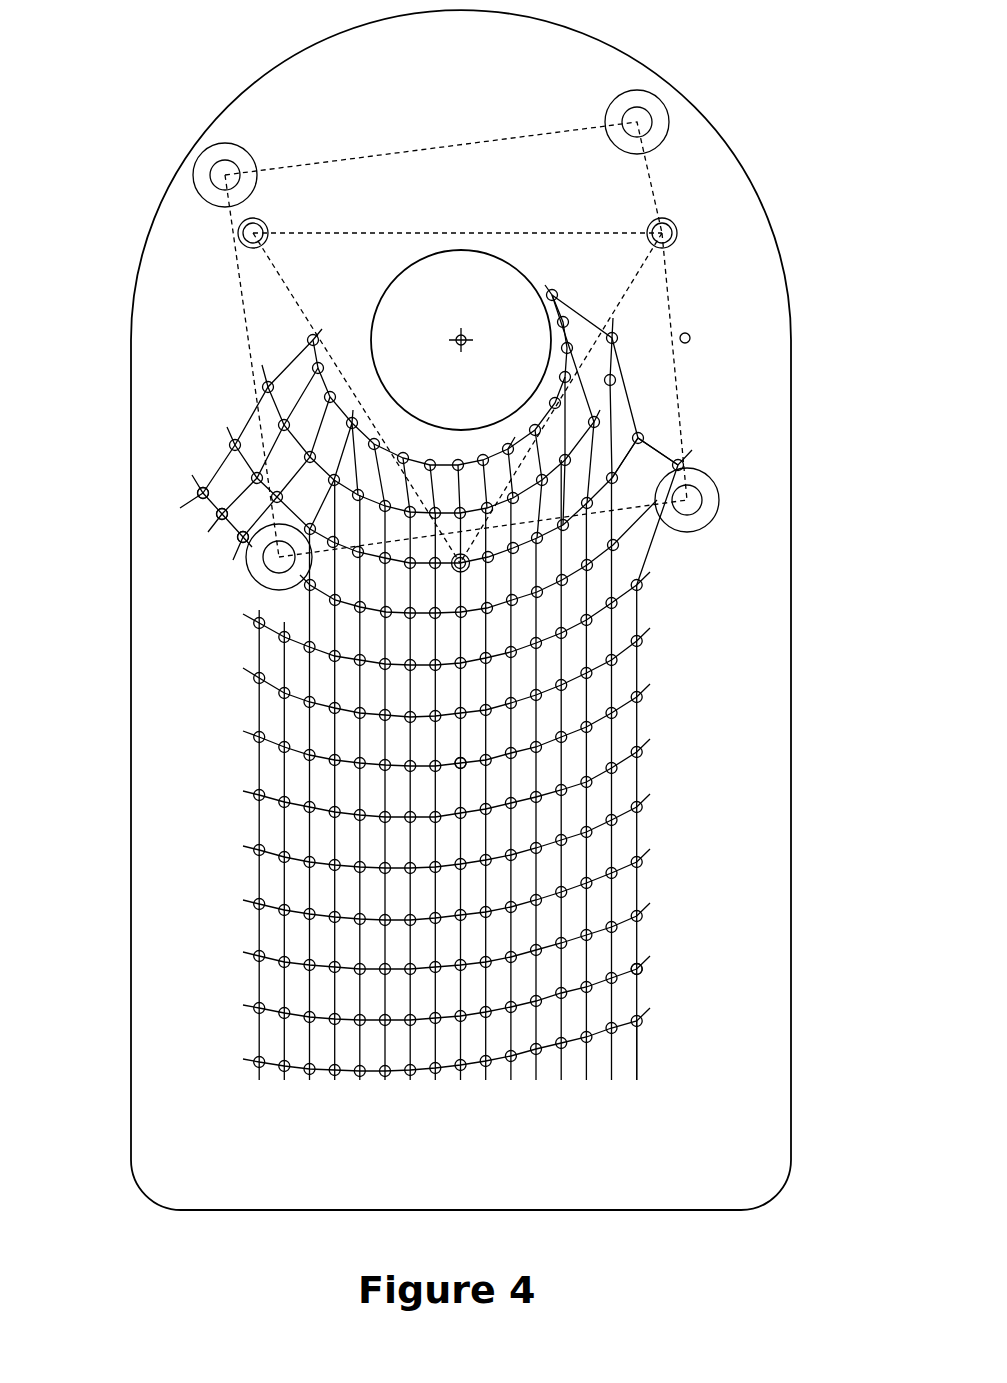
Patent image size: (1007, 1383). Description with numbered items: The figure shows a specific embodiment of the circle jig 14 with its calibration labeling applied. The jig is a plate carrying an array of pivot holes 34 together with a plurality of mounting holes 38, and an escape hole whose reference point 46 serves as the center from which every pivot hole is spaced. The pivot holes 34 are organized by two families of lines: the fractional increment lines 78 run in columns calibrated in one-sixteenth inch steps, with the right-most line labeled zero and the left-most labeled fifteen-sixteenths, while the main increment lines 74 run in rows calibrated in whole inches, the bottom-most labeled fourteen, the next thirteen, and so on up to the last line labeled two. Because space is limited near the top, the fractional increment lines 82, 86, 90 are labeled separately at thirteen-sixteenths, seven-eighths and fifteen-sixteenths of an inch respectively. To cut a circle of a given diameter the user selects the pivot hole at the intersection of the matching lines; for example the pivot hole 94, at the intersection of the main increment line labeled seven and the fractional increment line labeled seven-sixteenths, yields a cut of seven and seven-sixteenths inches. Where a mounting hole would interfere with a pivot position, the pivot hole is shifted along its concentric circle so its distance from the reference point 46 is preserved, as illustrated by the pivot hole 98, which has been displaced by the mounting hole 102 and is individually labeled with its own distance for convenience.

The circle jig 14 is at (738, 165).
The pivot holes 34 is at (645, 762).
The mounting holes 38 is at (650, 113).
The reference point 46 is at (461, 335).
The main increment lines 74 is at (648, 980).
The fractional increment lines 78 is at (648, 1078).
The fractional increment line 82 is at (232, 510).
The fractional increment line 86 is at (243, 505).
The fractional increment line 90 is at (252, 516).
The pivot hole 94 is at (457, 707).
The pivot hole 98 is at (691, 336).
The mounting hole 102 is at (466, 542).